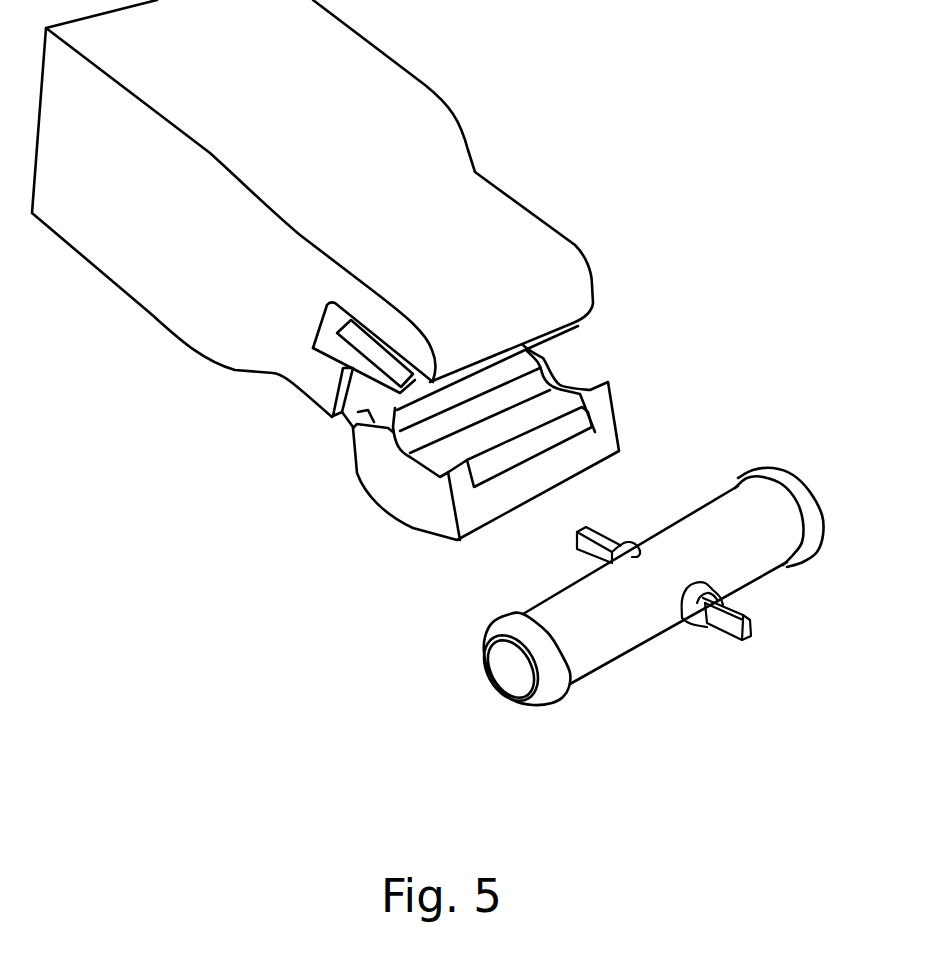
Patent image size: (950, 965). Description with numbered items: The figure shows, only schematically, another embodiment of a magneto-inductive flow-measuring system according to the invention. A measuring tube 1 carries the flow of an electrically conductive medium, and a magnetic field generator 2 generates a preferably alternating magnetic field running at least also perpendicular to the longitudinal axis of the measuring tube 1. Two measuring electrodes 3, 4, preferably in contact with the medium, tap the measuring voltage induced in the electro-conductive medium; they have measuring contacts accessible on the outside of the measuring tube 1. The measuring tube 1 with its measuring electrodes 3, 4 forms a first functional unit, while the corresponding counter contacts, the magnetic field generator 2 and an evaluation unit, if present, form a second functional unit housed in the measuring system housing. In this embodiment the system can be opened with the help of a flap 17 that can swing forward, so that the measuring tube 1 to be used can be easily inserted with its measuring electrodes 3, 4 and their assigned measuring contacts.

The measuring tube 1 is at (737, 537).
The magnetic field generator 2 is at (312, 213).
The measuring electrode 3 is at (597, 550).
The measuring electrode 4 is at (732, 625).
The flap 17 is at (415, 505).